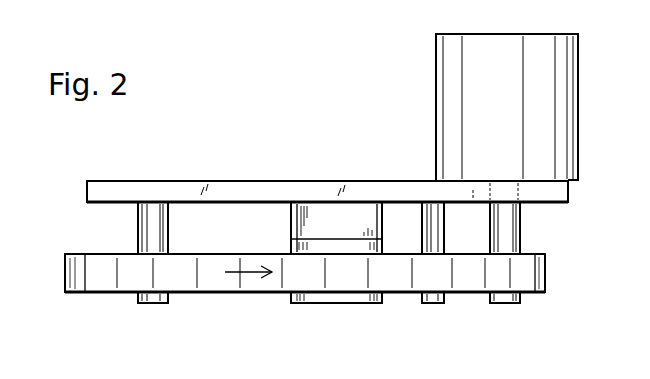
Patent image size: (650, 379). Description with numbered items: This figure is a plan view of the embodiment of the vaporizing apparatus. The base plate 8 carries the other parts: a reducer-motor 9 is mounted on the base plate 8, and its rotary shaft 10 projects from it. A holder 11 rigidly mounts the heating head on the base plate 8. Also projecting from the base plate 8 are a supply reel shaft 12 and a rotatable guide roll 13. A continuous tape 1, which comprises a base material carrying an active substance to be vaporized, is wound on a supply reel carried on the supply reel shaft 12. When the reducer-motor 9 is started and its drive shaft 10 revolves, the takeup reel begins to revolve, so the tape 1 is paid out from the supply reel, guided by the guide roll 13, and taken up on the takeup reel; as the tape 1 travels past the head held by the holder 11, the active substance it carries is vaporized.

The continuous tape 1 is at (465, 282).
The base plate 8 is at (234, 188).
The reducer-motor 9 is at (443, 68).
The rotary shaft 10 is at (510, 227).
The holder 11 is at (328, 210).
The supply reel shaft 12 is at (143, 232).
The rotatable guide roll 13 is at (428, 222).